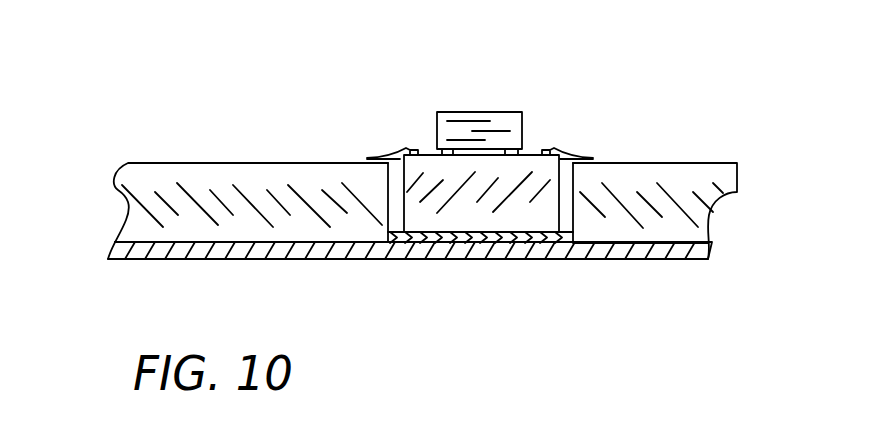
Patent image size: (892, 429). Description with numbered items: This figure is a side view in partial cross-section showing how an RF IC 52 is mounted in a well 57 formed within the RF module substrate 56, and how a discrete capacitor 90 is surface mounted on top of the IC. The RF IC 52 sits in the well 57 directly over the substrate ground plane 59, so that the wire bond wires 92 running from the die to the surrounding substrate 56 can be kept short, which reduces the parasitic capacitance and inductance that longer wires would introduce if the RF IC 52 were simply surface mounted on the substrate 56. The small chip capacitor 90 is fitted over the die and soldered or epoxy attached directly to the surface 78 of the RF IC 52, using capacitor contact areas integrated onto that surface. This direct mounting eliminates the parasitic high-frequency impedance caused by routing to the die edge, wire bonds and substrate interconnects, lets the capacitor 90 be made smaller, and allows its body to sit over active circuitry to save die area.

The RF IC 52 is at (527, 208).
The RF module substrate 56 is at (128, 197).
The well 57 is at (397, 215).
The substrate ground plane 59 is at (649, 252).
The surface of the RF IC 78 is at (530, 150).
The discrete capacitor 90 is at (477, 110).
The wire bond wires 92 is at (392, 150).